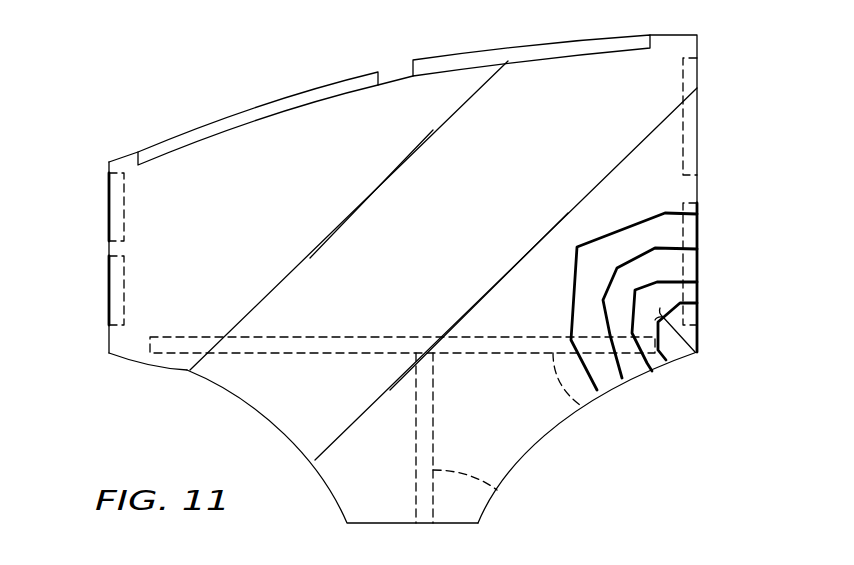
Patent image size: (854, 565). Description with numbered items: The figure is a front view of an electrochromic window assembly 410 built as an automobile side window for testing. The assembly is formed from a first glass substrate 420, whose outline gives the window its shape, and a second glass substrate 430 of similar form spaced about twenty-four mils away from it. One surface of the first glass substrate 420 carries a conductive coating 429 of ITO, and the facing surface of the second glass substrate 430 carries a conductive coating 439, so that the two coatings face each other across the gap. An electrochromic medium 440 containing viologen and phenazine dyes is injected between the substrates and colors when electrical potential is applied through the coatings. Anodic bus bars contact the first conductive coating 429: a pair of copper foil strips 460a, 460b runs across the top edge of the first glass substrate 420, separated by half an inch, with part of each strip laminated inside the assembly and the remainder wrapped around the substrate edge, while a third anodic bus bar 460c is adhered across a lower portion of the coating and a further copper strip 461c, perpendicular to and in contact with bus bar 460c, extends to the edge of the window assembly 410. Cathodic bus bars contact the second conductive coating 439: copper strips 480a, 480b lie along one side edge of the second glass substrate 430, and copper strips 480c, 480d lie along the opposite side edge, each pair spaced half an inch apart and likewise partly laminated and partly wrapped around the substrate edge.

The electrochromic window assembly 410 is at (729, 42).
The first glass substrate 420 is at (663, 188).
The conductive coating 429 is at (673, 233).
The electrochromic medium 440 is at (673, 267).
The conductive coating 439 is at (692, 347).
The second glass substrate 430 is at (671, 351).
The anodic bus bar 460a is at (253, 105).
The anodic bus bar 460b is at (564, 38).
The third anodic bus bar 460c is at (583, 405).
The strip 461c is at (500, 490).
The cathodic bus bar 480a is at (109, 213).
The cathodic bus bar 480b is at (109, 296).
The cathodic bus bar 480c is at (700, 123).
The cathodic bus bar 480d is at (690, 312).